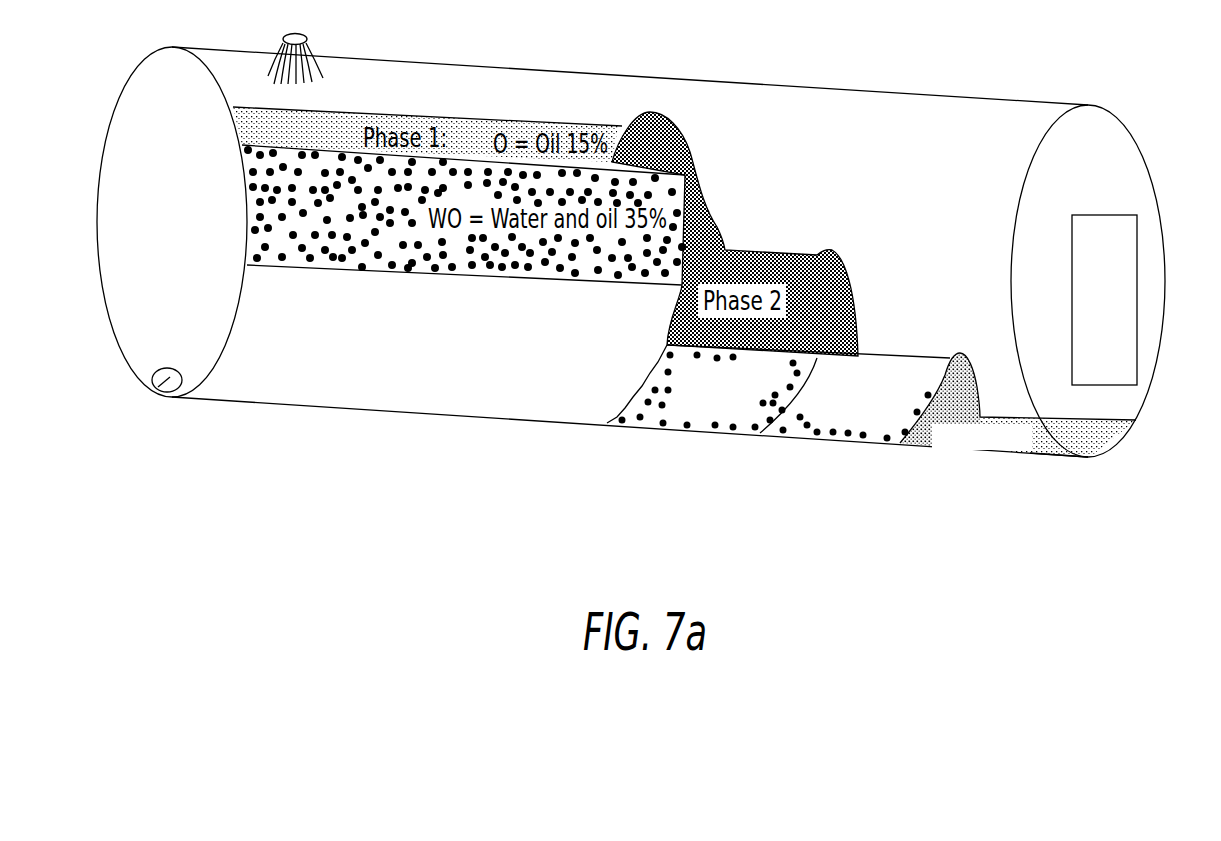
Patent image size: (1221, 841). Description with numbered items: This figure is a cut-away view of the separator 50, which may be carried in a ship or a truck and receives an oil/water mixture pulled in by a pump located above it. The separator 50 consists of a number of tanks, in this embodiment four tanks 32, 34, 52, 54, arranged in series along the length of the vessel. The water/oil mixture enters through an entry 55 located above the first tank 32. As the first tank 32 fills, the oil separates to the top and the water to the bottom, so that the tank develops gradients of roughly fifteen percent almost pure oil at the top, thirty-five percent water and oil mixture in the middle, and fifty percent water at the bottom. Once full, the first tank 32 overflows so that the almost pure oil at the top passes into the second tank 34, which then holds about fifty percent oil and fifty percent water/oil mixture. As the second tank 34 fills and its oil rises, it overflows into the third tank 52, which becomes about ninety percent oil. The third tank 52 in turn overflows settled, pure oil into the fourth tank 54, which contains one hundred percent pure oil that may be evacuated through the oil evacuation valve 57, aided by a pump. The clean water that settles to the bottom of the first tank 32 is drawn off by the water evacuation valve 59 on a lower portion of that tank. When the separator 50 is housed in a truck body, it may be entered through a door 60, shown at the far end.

The separator 50 is at (670, 58).
The entry 55 is at (298, 37).
The door 60 is at (1102, 245).
The water evacuation valve 59 is at (152, 393).
The first tank 32 is at (423, 382).
The second tank 34 is at (653, 417).
The third tank 52 is at (877, 435).
The fourth tank 54 is at (968, 442).
The oil evacuation valve 57 is at (1105, 438).